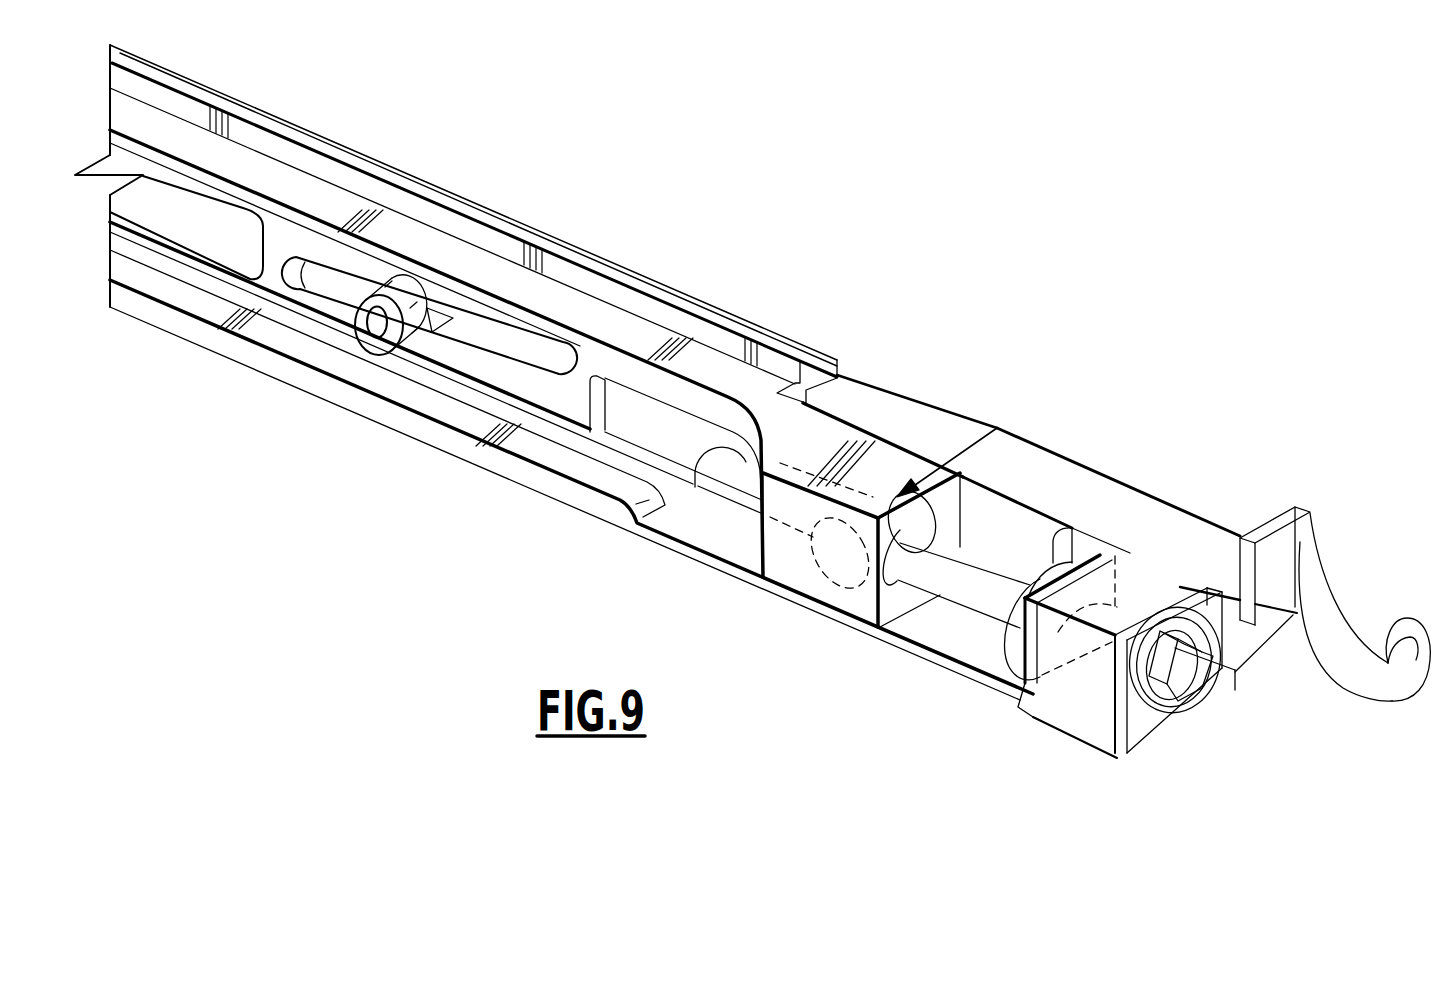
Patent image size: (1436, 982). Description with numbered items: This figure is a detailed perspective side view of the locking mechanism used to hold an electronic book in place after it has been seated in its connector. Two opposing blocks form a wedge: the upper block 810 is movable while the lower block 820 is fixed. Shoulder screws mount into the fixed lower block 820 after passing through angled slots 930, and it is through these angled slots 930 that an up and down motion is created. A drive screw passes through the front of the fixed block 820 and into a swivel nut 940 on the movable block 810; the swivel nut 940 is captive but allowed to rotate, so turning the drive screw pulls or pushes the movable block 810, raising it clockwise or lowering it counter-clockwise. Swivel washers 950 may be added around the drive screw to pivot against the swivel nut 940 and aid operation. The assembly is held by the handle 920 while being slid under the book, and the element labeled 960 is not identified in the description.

The upper block 810 is at (395, 186).
The lower block 820 is at (700, 533).
The handle 920 is at (1362, 640).
The angled slots 930 is at (480, 352).
The swivel nut 940 is at (952, 468).
The swivel washers 950 is at (1112, 682).
The bracket 960 is at (1268, 578).